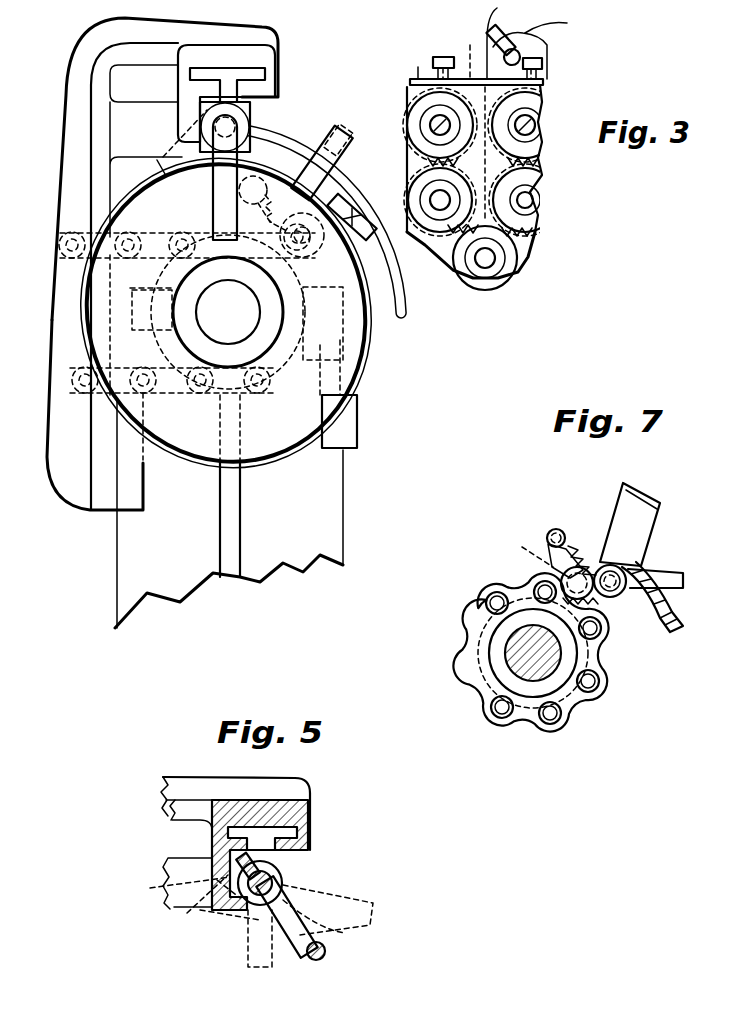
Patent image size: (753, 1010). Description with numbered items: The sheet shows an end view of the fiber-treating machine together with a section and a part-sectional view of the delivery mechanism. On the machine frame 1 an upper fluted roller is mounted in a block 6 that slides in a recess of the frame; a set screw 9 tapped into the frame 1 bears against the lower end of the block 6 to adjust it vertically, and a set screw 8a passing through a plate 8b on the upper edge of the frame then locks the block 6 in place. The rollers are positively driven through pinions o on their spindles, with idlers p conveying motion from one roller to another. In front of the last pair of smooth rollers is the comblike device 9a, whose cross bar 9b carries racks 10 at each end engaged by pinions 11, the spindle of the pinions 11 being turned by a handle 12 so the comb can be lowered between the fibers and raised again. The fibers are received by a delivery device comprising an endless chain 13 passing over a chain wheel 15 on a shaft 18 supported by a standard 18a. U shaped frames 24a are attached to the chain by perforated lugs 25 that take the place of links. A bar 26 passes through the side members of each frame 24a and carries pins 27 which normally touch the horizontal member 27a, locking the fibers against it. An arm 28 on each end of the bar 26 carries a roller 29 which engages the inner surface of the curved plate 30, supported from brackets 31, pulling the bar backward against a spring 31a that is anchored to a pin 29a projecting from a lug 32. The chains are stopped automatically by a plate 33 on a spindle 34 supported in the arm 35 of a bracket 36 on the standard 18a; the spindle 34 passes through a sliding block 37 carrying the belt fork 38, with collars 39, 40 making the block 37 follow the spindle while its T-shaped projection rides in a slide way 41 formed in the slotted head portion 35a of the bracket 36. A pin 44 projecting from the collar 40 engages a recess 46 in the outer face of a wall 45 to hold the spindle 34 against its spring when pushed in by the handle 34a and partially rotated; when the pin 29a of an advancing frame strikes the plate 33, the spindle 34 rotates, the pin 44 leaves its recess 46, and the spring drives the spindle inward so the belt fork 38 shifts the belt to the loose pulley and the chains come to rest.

In FIG. 3, the frame 1 is at (410, 92).
In FIG. 3, the block 6 is at (406, 114).
In FIG. 3, the set screw 9 is at (404, 146).
In FIG. 3, the idlers p is at (515, 256).
In FIG. 3, the pinions o is at (538, 95).
In FIG. 3, the set screw 8a is at (440, 56).
In FIG. 3, the plate 8b is at (417, 70).
In FIG. 3, the comblike device 9a is at (464, 52).
In FIG. 3, the cross bar 9b is at (503, 42).
In FIG. 3, the racks 10 is at (513, 40).
In FIG. 3, the pinions 11 is at (542, 62).
In FIG. 3, the handle 12 is at (555, 31).
In FIG. 3, the endless chain 13 is at (54, 262).
In FIG. 7, the endless chain 13 is at (484, 597).
In FIG. 7, the chain wheel 15 is at (478, 683).
In FIG. 3, the shaft 18 is at (226, 312).
In FIG. 7, the shaft 18 is at (545, 676).
In FIG. 3, the standard 18a is at (253, 486).
In FIG. 3, the U shaped frame 24a is at (345, 160).
In FIG. 7, the U shaped frame 24a is at (630, 524).
In FIG. 7, the lugs 25 is at (561, 578).
In FIG. 7, the bar 26 is at (525, 550).
In FIG. 3, the pins 27 is at (351, 217).
In FIG. 7, the pins 27 is at (650, 577).
In FIG. 3, the horizontal member 27a is at (340, 134).
In FIG. 7, the horizontal member 27a is at (640, 485).
In FIG. 7, the arm 28 is at (593, 600).
In FIG. 3, the roller 29 is at (312, 255).
In FIG. 7, the roller 29 is at (630, 596).
In FIG. 7, the pin 29a is at (555, 530).
In FIG. 5, the pin 29a is at (325, 956).
In FIG. 3, the curved plate 30 is at (368, 242).
In FIG. 7, the curved plate 30 is at (675, 634).
In FIG. 3, the bracket 31 is at (350, 405).
In FIG. 3, the spring 31a is at (268, 180).
In FIG. 7, the spring 31a is at (579, 535).
In FIG. 7, the lug 32 is at (557, 528).
In FIG. 3, the plate 33 is at (146, 170).
In FIG. 5, the plate 33 is at (300, 932).
In FIG. 3, the spindle 34 is at (232, 128).
In FIG. 5, the spindle 34 is at (272, 872).
In FIG. 3, the handle 34a is at (228, 177).
In FIG. 5, the handle 34a is at (306, 938).
In FIG. 3, the arm 35 is at (146, 151).
In FIG. 5, the arm 35 is at (181, 854).
In FIG. 3, the slotted block 35a is at (276, 62).
In FIG. 5, the slotted block 35a is at (310, 810).
In FIG. 3, the bracket 36 is at (193, 38).
In FIG. 5, the bracket 36 is at (256, 779).
In FIG. 3, the sliding block 37 is at (252, 105).
In FIG. 5, the sliding block 37 is at (248, 866).
In FIG. 3, the belt fork 38 is at (407, 295).
In FIG. 3, the collar 39 is at (205, 127).
In FIG. 5, the collar 40 is at (323, 885).
In FIG. 3, the slide way 41 is at (190, 74).
In FIG. 5, the slide way 41 is at (297, 833).
In FIG. 5, the pin 44 is at (210, 873).
In FIG. 5, the wall 45 is at (247, 897).
In FIG. 5, the recess 46 is at (240, 871).